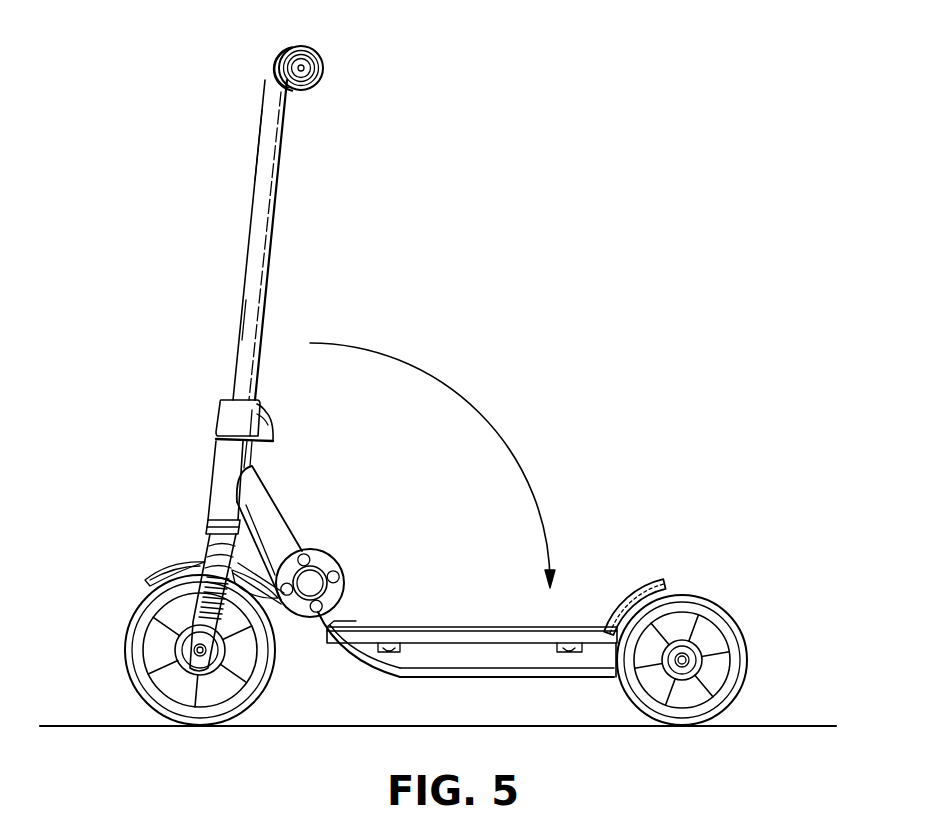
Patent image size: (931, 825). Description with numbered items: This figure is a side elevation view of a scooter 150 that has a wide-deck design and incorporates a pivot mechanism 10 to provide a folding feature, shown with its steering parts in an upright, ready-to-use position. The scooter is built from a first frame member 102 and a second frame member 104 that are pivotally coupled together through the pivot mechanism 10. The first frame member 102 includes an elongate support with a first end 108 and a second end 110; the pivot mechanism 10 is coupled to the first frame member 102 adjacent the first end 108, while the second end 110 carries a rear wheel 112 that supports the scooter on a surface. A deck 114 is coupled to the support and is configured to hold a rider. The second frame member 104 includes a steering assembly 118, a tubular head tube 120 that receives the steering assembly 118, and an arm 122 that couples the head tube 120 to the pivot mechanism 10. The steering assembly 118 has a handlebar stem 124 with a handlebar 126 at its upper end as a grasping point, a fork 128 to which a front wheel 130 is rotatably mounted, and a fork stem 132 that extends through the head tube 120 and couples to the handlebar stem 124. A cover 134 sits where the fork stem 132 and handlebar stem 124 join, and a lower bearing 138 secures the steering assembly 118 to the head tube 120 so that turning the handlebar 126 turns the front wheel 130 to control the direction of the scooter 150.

The scooter 150 is at (592, 151).
The handlebar 126 is at (323, 69).
The steering assembly 118 is at (282, 195).
The handlebar stem 124 is at (255, 240).
The second frame member 104 is at (226, 362).
The cover 134 is at (220, 412).
The head tube 120 is at (218, 468).
The lower bearing 138 is at (210, 521).
The fork stem 132 is at (200, 546).
The fork 128 is at (160, 592).
The front wheel 130 is at (126, 650).
The arm 122 is at (290, 518).
The pivot mechanism 10 is at (338, 548).
The deck 114 is at (447, 626).
The first frame member 102 is at (499, 668).
The first end 108 is at (372, 660).
The second end 110 is at (609, 660).
The rear wheel 112 is at (749, 652).